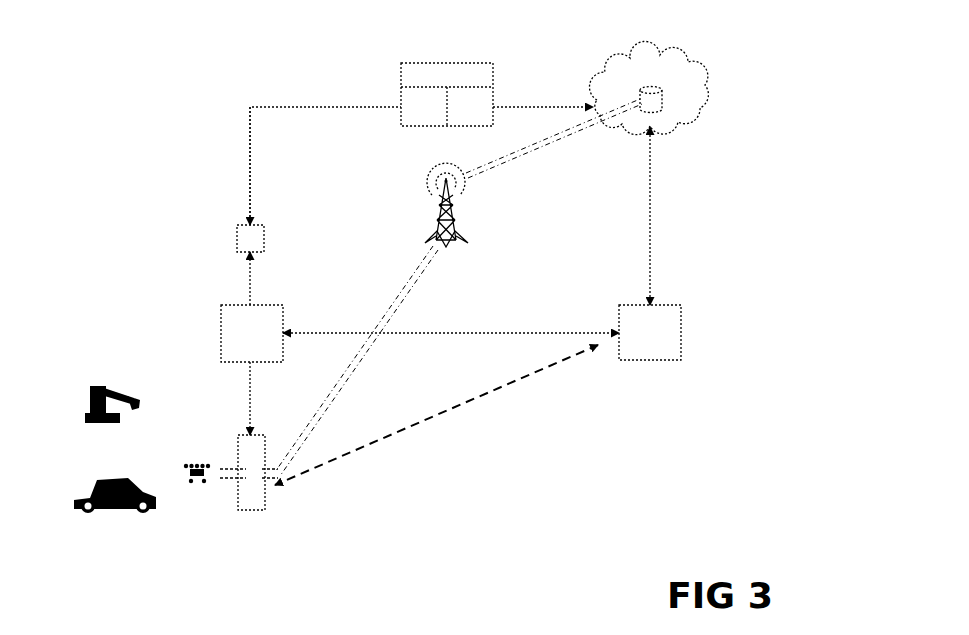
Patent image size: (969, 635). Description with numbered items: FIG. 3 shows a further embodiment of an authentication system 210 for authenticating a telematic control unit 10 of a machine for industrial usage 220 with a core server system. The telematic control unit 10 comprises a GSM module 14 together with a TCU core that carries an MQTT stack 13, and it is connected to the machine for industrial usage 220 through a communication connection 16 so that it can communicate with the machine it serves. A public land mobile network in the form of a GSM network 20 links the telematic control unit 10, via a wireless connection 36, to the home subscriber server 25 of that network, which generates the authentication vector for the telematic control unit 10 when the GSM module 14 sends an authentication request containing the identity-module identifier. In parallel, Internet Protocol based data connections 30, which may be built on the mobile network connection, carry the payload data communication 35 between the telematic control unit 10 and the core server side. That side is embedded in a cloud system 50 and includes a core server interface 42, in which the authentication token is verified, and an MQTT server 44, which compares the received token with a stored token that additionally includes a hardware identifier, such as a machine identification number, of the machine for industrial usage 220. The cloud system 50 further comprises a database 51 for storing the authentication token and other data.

The authentication system 210 is at (146, 79).
The machine for industrial usage 220 is at (107, 360).
The home subscriber server 25 is at (458, 72).
The Internet Protocol based data connections 30 is at (538, 92).
The cloud system 50 is at (678, 143).
The database 51 is at (658, 98).
The GSM network 20 is at (404, 196).
The GSM module 14 is at (247, 240).
The MQTT stack 13 is at (240, 335).
The payload data communication 35 is at (543, 335).
The wireless connection 36 is at (398, 433).
The telematic control unit 10 is at (258, 497).
The communication connection 16 is at (221, 509).
The core server interface 42 is at (612, 350).
The MQTT server 44 is at (660, 348).